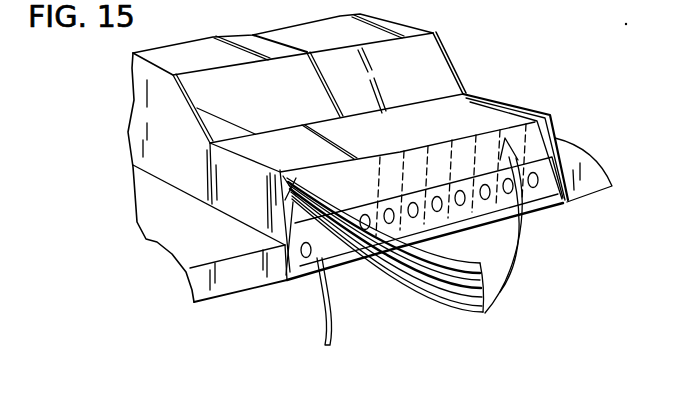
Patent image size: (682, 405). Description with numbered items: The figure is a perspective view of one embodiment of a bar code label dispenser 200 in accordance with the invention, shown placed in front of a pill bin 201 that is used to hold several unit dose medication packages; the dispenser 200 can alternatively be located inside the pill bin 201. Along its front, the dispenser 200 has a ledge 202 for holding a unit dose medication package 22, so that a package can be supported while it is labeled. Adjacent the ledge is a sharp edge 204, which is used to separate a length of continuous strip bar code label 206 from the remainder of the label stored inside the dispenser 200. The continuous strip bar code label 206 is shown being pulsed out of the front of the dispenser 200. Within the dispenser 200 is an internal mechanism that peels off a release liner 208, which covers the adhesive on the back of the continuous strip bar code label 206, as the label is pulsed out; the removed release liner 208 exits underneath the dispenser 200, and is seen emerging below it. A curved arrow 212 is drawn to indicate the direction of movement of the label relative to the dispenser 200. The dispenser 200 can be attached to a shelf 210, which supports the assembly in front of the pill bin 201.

The bar code label dispenser 200 is at (259, 199).
The pill bin 201 is at (466, 56).
The ledge 202 is at (552, 215).
The sharp edge 204 is at (300, 237).
The continuous strip bar code label 206 is at (437, 302).
The release liner 208 is at (320, 323).
The shelf 210 is at (248, 275).
The feed direction arrow 212 is at (407, 195).
The unit dose medication package 22 is at (558, 181).